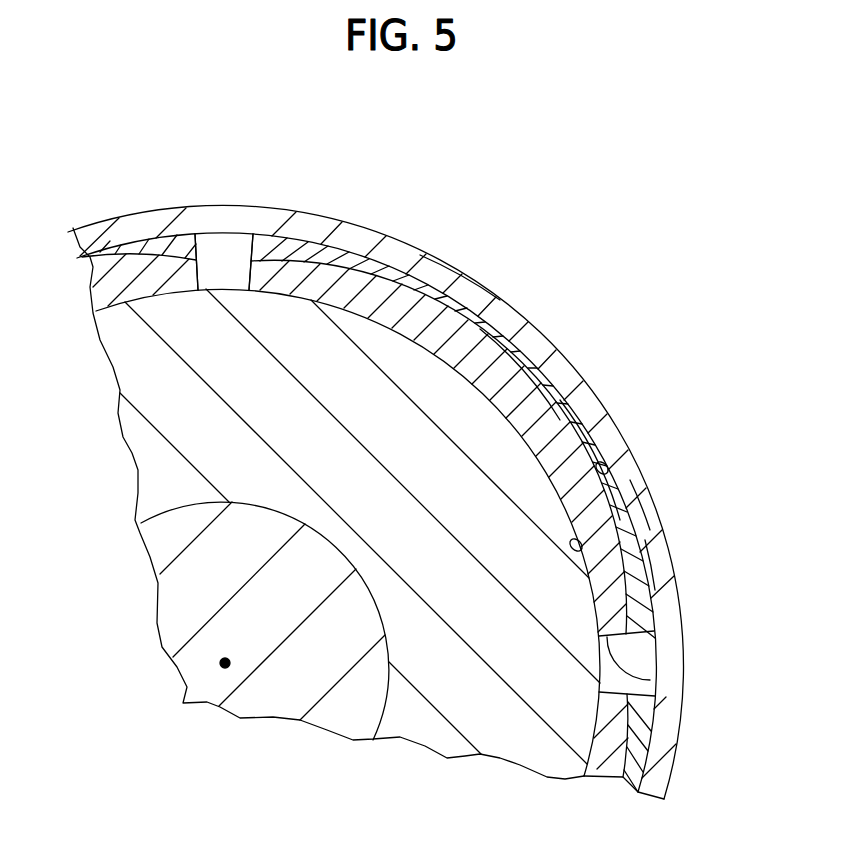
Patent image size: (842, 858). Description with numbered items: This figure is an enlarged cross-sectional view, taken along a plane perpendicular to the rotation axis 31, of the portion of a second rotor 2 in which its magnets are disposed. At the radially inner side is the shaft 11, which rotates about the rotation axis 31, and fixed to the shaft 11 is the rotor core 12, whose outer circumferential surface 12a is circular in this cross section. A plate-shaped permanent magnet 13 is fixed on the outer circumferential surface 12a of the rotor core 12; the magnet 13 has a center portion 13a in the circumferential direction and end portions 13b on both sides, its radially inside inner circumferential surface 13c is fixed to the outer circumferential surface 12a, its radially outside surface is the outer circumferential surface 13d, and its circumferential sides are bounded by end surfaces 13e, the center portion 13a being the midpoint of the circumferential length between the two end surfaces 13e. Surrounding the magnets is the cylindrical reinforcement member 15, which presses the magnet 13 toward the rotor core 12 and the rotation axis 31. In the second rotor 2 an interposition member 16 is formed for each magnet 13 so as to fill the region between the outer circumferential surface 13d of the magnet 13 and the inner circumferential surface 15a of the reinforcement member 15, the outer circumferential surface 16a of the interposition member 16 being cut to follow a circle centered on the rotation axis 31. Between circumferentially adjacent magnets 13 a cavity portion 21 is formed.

The second rotor 2 is at (642, 187).
The shaft 11 is at (185, 597).
The rotor core 12 is at (150, 458).
The outer circumferential surface 12a is at (457, 270).
The magnet 13 is at (120, 286).
The center portion 13a is at (533, 324).
The end portion 13b is at (245, 235).
The inner circumferential surface 13c is at (640, 507).
The outer circumferential surface 13d is at (647, 560).
The end surface 13e is at (210, 252).
The reinforcement member 15 is at (637, 490).
The inner circumferential surface 15a is at (609, 458).
The interposition member 16 is at (128, 250).
The outer circumferential surface 16a is at (105, 245).
The cavity portion 21 is at (197, 218).
The rotation axis 31 is at (226, 672).